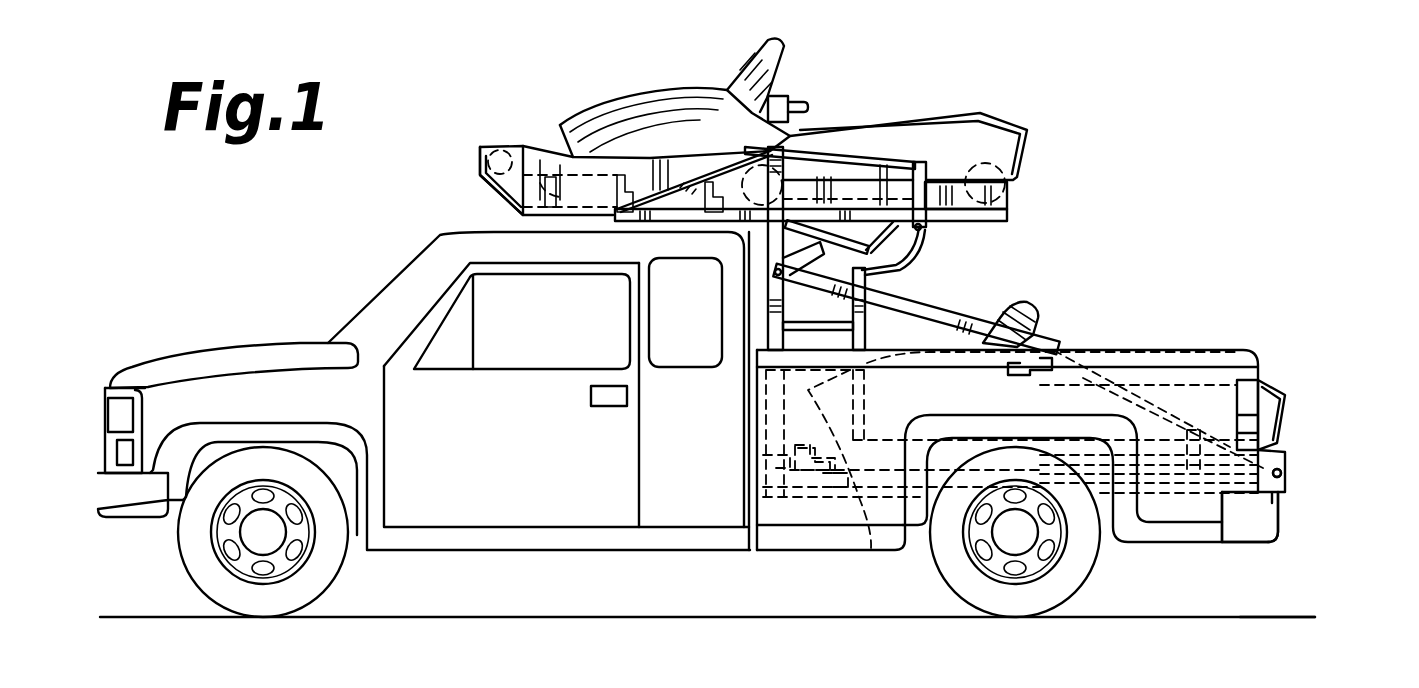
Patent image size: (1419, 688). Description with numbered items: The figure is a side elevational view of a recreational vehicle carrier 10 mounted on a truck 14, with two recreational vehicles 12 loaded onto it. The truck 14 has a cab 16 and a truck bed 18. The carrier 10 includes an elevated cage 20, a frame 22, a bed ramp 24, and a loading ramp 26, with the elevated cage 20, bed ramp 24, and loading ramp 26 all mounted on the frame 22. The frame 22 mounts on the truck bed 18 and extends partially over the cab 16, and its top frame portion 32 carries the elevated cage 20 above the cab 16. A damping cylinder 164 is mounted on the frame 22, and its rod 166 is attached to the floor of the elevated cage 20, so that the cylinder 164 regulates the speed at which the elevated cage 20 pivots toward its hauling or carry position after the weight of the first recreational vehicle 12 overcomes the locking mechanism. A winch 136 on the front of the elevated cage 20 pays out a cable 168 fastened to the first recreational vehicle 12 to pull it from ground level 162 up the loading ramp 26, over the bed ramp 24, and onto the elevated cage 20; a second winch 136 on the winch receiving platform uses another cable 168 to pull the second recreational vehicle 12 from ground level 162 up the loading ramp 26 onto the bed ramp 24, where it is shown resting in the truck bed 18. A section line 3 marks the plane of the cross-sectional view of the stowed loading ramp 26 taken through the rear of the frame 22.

The recreational vehicle carrier 10 is at (1093, 273).
The recreational vehicle 12 is at (937, 123).
The truck 14 is at (372, 278).
The cab 16 is at (446, 238).
The truck bed 18 is at (872, 540).
The elevated cage 20 is at (491, 150).
The frame 22 is at (962, 293).
The bed ramp 24 is at (1290, 480).
The loading ramp 26 is at (1237, 513).
The top frame portion 32 is at (808, 123).
The section line 3- 3 is at (1258, 337).
The winch 136 is at (510, 153).
The ground level 162 is at (1285, 617).
The damping cylinder 164 is at (812, 262).
The rod 166 is at (868, 248).
The cable 168 is at (550, 175).